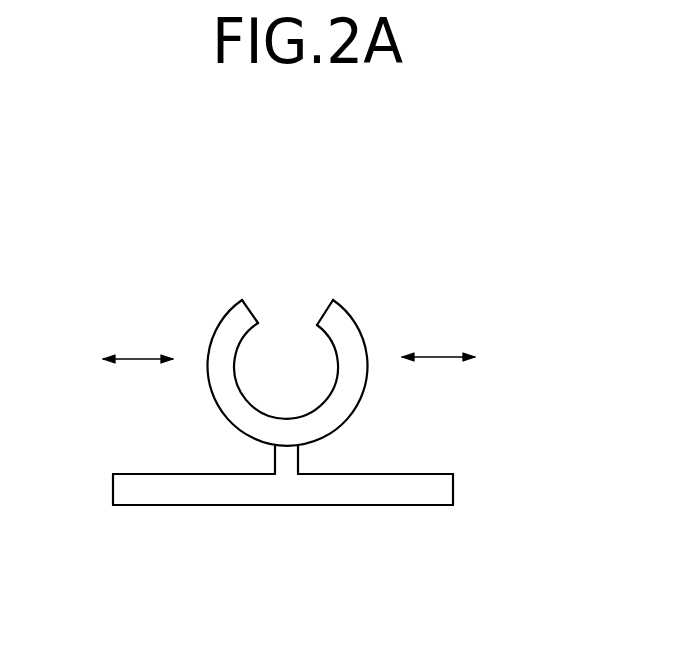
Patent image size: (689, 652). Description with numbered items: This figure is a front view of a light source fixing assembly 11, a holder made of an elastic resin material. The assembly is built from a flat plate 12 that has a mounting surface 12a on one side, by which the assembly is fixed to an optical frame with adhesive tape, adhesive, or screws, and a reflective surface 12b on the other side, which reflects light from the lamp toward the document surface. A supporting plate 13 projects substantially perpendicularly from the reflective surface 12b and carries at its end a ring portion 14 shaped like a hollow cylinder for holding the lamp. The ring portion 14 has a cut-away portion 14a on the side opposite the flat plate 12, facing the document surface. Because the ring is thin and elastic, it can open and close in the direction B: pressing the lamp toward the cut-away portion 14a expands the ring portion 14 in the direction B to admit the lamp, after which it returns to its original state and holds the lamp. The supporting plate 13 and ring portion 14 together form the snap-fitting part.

The light source fixing assembly 11 is at (390, 308).
The flat plate 12 is at (435, 474).
The mounting surface 12a is at (405, 507).
The reflective surface 12b is at (180, 474).
The supporting plate 13 is at (298, 463).
The ring portion 14 is at (334, 305).
The cut-away portion 14a is at (283, 310).
The direction B is at (289, 340).